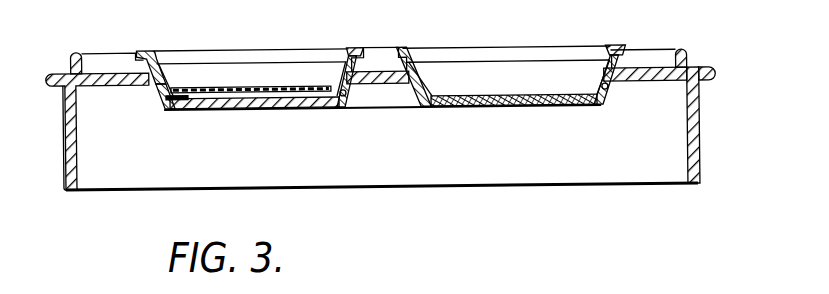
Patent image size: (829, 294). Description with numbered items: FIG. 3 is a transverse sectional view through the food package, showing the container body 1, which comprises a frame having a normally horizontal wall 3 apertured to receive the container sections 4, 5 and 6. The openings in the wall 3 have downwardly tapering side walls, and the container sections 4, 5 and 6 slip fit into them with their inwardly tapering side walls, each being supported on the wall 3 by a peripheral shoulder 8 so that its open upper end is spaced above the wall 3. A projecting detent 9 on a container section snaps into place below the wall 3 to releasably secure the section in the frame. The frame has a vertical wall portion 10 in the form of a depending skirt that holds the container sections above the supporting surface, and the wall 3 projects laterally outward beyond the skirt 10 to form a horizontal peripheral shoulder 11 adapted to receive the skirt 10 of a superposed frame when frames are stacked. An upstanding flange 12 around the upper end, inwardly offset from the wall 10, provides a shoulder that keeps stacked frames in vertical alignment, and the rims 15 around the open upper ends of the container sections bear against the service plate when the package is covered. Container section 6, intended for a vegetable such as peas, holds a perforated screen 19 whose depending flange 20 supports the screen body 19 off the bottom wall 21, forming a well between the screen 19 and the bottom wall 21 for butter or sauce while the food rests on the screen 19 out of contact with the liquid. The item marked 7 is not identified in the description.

The container body 1 is at (60, 137).
The horizontal wall 3 is at (645, 78).
The container section 4 is at (375, 51).
The container section 5 is at (520, 52).
The container section 6 is at (305, 52).
The bead 7 is at (347, 98).
The peripheral shoulder 8 is at (134, 64).
The detent 9 is at (156, 97).
The vertical wall portion 10 is at (702, 134).
The peripheral shoulder 11 is at (706, 76).
The upstanding flange 12 is at (682, 57).
The rim 15 is at (150, 53).
The screen 19 is at (231, 89).
The depending flange 20 is at (188, 102).
The bottom wall 21 is at (282, 110).